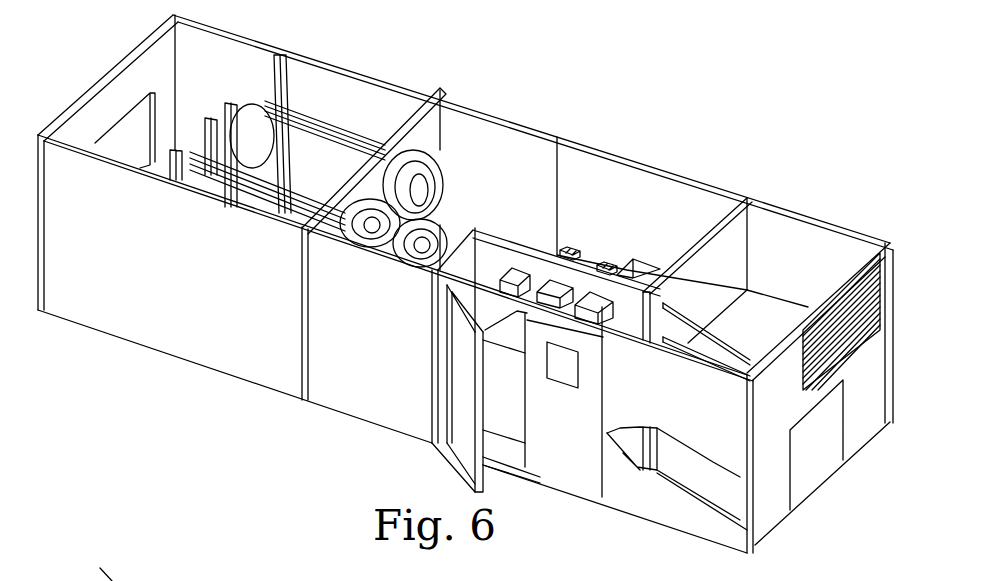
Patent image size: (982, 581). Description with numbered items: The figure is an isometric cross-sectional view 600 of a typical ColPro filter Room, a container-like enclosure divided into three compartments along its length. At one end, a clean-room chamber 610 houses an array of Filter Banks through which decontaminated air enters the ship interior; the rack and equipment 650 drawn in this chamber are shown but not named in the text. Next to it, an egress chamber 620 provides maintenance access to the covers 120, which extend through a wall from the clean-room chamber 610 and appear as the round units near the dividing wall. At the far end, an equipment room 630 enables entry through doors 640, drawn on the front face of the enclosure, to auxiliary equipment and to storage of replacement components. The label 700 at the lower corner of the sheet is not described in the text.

The isometric cross-sectional view 600 is at (681, 49).
The clean-room chamber 610 is at (238, 84).
The egress chamber 620 is at (535, 189).
The equipment room 630 is at (783, 326).
The doors 640 is at (583, 429).
The rail and equipment assembly 650 is at (306, 118).
The covers 120 is at (433, 152).
The base / sheet reference 700 is at (99, 563).